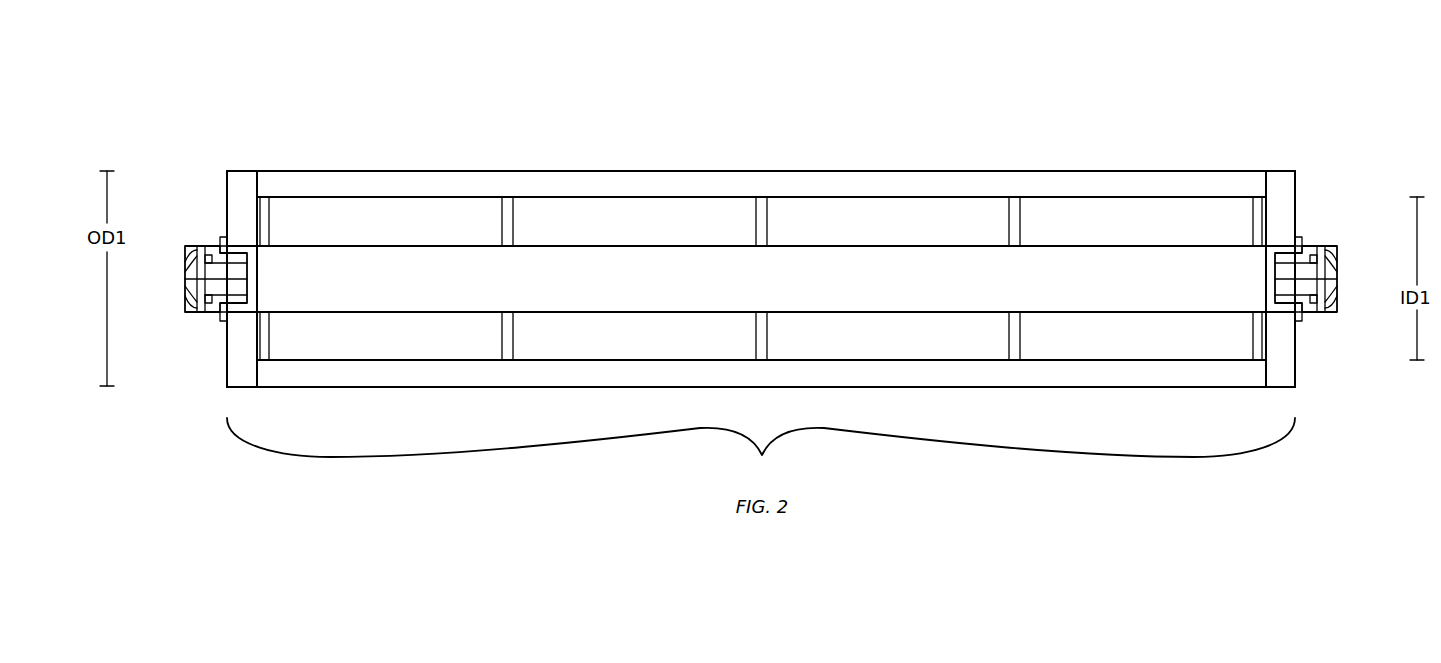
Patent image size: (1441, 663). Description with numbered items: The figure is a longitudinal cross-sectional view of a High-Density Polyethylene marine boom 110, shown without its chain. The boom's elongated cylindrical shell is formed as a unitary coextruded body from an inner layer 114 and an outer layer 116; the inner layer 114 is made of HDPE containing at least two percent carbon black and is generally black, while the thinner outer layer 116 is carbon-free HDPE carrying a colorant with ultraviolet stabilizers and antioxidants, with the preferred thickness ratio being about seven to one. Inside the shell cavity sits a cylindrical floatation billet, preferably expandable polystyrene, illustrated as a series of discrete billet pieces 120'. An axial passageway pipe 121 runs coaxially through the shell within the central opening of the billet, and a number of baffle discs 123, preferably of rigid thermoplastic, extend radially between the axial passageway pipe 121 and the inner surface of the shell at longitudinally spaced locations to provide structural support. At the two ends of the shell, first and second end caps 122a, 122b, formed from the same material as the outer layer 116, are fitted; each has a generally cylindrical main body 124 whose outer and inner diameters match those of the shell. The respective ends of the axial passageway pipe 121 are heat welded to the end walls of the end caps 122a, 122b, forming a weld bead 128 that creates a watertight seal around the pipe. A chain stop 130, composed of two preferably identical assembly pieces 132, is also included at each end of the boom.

The marine boom 110 is at (890, 88).
The inner layer 114 is at (646, 182).
The outer layer 116 is at (830, 171).
The billet pieces 120' is at (761, 278).
The axial passageway pipe 121 is at (925, 248).
The first end cap 122a is at (237, 182).
The second end cap 122b is at (1285, 182).
The baffle discs 123 is at (514, 220).
The main body 124 is at (233, 375).
The weld bead 128 is at (222, 238).
The chain stop 130 is at (150, 262).
The assembly pieces 132 is at (185, 248).